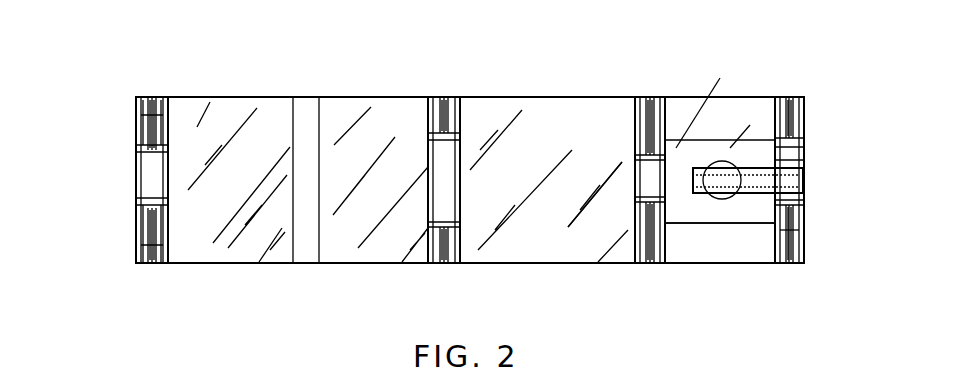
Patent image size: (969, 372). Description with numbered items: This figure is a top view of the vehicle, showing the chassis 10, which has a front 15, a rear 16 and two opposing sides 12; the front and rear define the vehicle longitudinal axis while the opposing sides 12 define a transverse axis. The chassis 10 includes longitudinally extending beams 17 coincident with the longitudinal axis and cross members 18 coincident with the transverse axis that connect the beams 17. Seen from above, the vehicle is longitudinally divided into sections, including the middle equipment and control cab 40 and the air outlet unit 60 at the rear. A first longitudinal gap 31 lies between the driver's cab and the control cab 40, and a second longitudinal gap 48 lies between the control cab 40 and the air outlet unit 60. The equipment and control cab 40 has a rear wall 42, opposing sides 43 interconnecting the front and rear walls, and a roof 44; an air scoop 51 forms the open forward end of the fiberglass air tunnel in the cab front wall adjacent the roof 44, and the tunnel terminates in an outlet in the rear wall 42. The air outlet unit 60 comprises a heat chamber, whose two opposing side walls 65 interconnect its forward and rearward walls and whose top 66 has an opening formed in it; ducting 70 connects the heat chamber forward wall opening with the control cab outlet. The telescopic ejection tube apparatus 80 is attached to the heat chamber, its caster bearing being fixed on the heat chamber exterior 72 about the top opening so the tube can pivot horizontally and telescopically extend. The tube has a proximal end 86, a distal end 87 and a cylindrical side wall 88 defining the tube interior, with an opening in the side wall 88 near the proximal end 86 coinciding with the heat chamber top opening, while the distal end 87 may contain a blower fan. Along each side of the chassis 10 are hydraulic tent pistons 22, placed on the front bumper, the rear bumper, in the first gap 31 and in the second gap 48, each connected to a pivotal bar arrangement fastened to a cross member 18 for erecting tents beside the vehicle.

The chassis 10 is at (680, 265).
The opposing sides 12 is at (358, 97).
The front 15 is at (138, 193).
The rear 16 is at (775, 152).
The longitudinally extending beams 17 is at (140, 128).
The cross members 18 is at (136, 96).
The hydraulic tent pistons 22 is at (158, 100).
The first longitudinal gap 31 is at (436, 100).
The equipment and control cab 40 is at (563, 112).
The rear wall 42 is at (636, 128).
The opposing sides 43 is at (530, 97).
The roof 44 is at (535, 185).
The second longitudinal gap 48 is at (641, 97).
The air scoop 51 is at (447, 164).
The air outlet unit 60 is at (740, 213).
The side walls 65 is at (703, 135).
The top 66 is at (714, 98).
The ducting 70 is at (643, 183).
The heat chamber exterior 72 is at (749, 126).
The telescopic ejection tube apparatus 80 is at (805, 128).
The proximal end 86 is at (692, 178).
The distal end 87 is at (803, 178).
The cylindrical side wall 88 is at (778, 208).